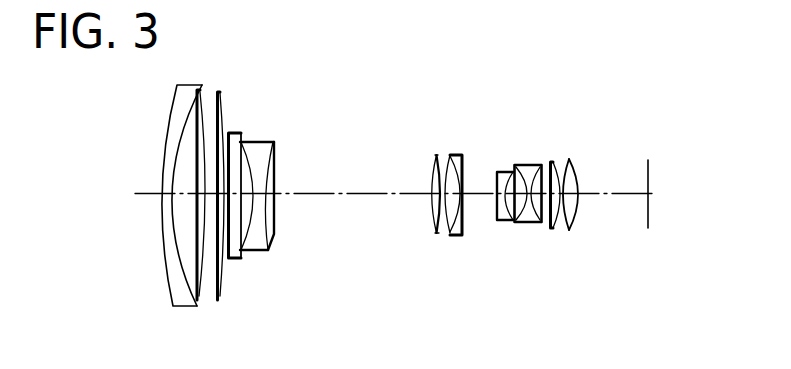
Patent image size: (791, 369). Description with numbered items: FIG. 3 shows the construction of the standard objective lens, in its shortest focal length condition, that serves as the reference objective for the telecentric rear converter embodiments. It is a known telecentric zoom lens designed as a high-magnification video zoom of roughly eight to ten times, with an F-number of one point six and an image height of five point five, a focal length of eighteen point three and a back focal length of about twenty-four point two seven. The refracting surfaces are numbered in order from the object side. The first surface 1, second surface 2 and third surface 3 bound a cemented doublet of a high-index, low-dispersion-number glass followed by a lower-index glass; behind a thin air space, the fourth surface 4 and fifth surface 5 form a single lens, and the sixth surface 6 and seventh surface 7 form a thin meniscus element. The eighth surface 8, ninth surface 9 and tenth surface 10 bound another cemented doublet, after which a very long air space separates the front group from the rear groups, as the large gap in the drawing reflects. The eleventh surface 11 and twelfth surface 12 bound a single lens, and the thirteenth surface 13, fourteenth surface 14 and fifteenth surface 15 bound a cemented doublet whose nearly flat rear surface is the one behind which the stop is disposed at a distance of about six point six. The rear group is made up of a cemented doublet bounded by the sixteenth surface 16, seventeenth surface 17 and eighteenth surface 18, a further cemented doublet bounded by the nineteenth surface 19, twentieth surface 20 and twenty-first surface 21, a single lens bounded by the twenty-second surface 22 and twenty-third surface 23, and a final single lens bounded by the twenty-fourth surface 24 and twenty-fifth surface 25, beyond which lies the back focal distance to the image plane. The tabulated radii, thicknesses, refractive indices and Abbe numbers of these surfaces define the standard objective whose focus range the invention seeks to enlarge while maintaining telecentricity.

The first lens surface 1 is at (176, 306).
The second lens surface 2 is at (196, 304).
The third lens surface 3 is at (203, 297).
The fourth lens surface 4 is at (208, 296).
The fifth lens surface 5 is at (219, 299).
The sixth lens surface 6 is at (233, 132).
The seventh lens surface 7 is at (243, 141).
The eighth lens surface 8 is at (252, 142).
The ninth lens surface 9 is at (264, 142).
The tenth lens surface 10 is at (274, 143).
The eleventh lens surface 11 is at (432, 230).
The twelfth lens surface 12 is at (437, 236).
The thirteenth lens surface 13 is at (446, 234).
The fourteenth lens surface 14 is at (455, 235).
The fifteenth lens surface 15 is at (465, 232).
The sixteenth lens surface 16 is at (497, 174).
The seventeenth lens surface 17 is at (505, 176).
The eighteenth lens surface 18 is at (514, 167).
The nineteenth lens surface 19 is at (531, 170).
The twentieth lens surface 20 is at (542, 167).
The twenty-first lens surface 21 is at (552, 163).
The twenty-second lens surface 22 is at (549, 228).
The twenty-third lens surface 23 is at (560, 229).
The twenty-fourth lens surface 24 is at (568, 231).
The twenty-fifth lens surface 25 is at (576, 229).